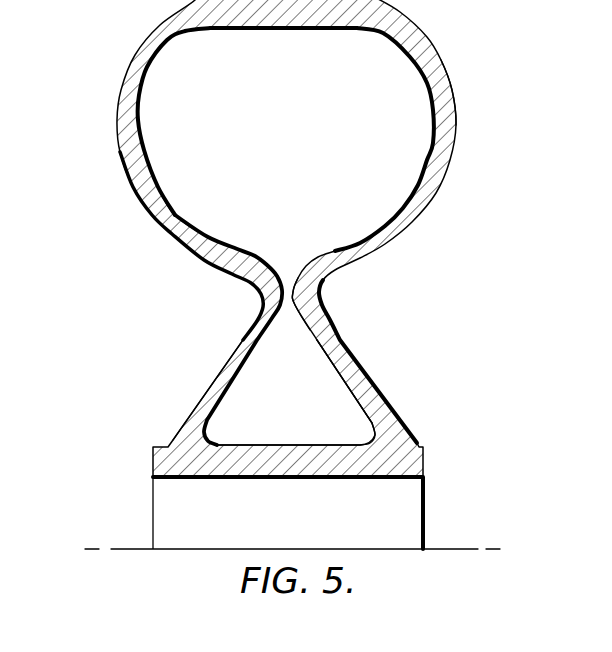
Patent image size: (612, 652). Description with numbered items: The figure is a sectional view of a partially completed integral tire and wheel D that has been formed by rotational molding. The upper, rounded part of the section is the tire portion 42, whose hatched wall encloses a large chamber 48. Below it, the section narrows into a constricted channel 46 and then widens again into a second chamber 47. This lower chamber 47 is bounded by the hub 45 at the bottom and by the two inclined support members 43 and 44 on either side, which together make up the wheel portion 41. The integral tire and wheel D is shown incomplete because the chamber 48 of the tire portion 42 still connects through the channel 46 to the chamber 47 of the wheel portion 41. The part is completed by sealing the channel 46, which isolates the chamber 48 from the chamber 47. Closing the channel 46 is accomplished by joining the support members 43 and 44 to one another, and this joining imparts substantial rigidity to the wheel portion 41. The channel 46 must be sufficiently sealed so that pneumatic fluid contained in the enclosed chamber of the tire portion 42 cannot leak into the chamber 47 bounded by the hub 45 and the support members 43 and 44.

The wheel portion 41 is at (362, 360).
The tire portion 42 is at (125, 110).
The support member 43 is at (218, 383).
The support member 44 is at (375, 385).
The hub 45 is at (163, 461).
The channel 46 is at (287, 293).
The chamber 47 is at (298, 412).
The chamber 48 is at (296, 132).
The integral tire and wheel D is at (452, 75).